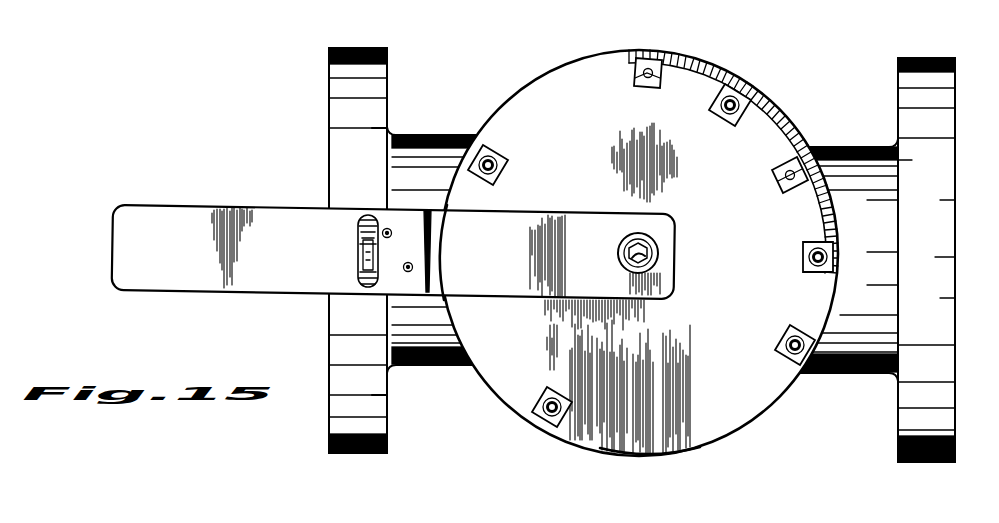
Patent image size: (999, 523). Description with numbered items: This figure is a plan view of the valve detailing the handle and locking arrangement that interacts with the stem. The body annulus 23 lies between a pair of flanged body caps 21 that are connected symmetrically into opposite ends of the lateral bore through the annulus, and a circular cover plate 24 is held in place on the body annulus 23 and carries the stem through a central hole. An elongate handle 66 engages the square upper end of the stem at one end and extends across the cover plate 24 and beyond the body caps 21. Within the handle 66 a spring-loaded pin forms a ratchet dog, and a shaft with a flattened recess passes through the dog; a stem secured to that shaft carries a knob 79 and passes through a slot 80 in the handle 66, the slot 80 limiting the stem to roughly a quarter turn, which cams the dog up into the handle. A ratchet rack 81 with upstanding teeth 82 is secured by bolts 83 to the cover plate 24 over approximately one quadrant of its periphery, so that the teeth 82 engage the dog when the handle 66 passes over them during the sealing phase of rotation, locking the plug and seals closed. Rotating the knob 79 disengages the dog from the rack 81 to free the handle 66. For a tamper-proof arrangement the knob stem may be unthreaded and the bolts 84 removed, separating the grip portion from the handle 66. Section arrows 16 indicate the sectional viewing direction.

The section line arrows 16 is at (73, 216).
The flanged body caps 21 is at (329, 86).
The body annulus 23 is at (516, 416).
The cover plate 24 is at (668, 457).
The elongate handle 66 is at (234, 202).
The knob 79 is at (358, 224).
The slot 80 is at (358, 270).
The ratchet rack 81 is at (775, 98).
The upstanding teeth 82 is at (736, 86).
The bolts 83 is at (634, 76).
The bolts 84 is at (412, 264).